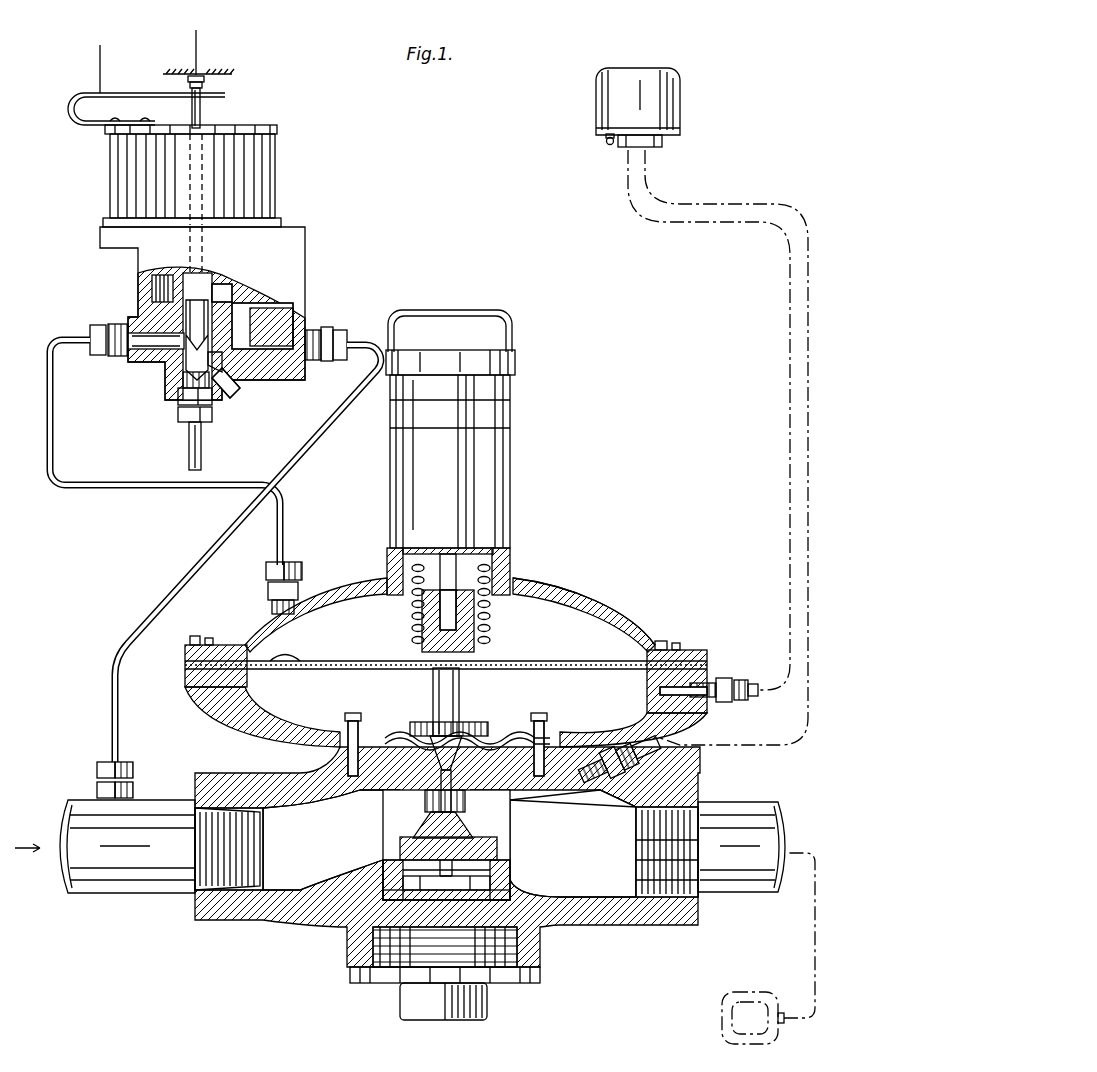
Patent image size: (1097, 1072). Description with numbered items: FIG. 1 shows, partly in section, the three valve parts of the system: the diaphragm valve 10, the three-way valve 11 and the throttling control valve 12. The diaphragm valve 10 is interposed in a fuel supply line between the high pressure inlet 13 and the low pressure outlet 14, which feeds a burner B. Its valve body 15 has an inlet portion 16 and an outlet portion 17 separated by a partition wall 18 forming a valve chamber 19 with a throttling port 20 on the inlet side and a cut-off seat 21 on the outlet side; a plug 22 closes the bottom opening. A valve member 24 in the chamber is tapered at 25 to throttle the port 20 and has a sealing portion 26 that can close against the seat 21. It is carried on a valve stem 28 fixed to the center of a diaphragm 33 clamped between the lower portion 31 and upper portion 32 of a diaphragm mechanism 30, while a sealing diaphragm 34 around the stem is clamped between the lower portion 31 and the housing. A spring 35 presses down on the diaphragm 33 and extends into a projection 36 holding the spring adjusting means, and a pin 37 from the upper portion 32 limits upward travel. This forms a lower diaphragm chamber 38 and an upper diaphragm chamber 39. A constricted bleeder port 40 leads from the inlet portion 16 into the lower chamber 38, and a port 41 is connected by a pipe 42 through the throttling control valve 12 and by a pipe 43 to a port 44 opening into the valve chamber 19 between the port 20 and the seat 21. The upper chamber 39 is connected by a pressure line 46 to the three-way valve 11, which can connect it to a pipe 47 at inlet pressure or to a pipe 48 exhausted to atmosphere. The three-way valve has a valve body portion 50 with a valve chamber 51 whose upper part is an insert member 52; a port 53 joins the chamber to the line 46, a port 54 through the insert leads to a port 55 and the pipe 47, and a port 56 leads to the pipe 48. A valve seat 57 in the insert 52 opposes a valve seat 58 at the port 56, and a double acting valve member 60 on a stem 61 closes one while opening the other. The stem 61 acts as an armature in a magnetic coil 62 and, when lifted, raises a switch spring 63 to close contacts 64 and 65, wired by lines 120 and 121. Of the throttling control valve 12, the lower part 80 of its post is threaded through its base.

The diaphragm valve 10 is at (664, 140).
The three-way valve 11 is at (321, 248).
The throttling control valve 12 is at (588, 123).
The high pressure inlet 13 is at (125, 895).
The low pressure outlet 14 is at (750, 890).
The valve body 15 is at (338, 912).
The inlet portion 16 is at (280, 895).
The outlet portion 17 is at (602, 895).
The partition wall 18 is at (365, 845).
The valve chamber 19 is at (500, 850).
The throttling port 20 is at (426, 796).
The cut-off seat 21 is at (500, 880).
The plug 22 is at (415, 992).
The valve member 24 is at (408, 822).
The tapered upper side 25 is at (460, 814).
The sealing portion 26 is at (467, 862).
The valve stem 28 is at (445, 762).
The diaphragm mechanism 30 is at (185, 674).
The lower portion 31 is at (285, 720).
The upper portion 32 is at (346, 602).
The diaphragm 33 is at (290, 660).
The sealing diaphragm 34 is at (488, 734).
The spring 35 is at (490, 632).
The projection 36 is at (496, 509).
The pin 37 is at (450, 560).
The lower diaphragm chamber 38 is at (604, 708).
The upper diaphragm chamber 39 is at (562, 614).
The bleeder port 40 is at (362, 716).
The port 41 is at (660, 691).
The pipe 42 is at (734, 222).
The pipe 43 is at (742, 204).
The port 44 is at (560, 840).
The pressure line 46 is at (60, 340).
The pipe 47 is at (310, 456).
The pipe 48 is at (203, 461).
The valve body portion 50 is at (306, 335).
The valve chamber 51 is at (216, 362).
The insert member 52 is at (214, 296).
The port 53 is at (156, 352).
The port 54 is at (166, 292).
The port 55 is at (288, 308).
The port 56 is at (183, 372).
The valve seat 57 is at (244, 306).
The valve seat 58 is at (214, 384).
The double acting valve member 60 is at (184, 322).
The stem 61 is at (201, 113).
The magnetic coil 62 is at (262, 190).
The switch spring 63 is at (133, 93).
The contact 64 is at (204, 85).
The contact 65 is at (210, 78).
The lower part of post 80 is at (608, 146).
The line 120 is at (100, 72).
The line 121 is at (200, 52).
The burner B is at (720, 1017).